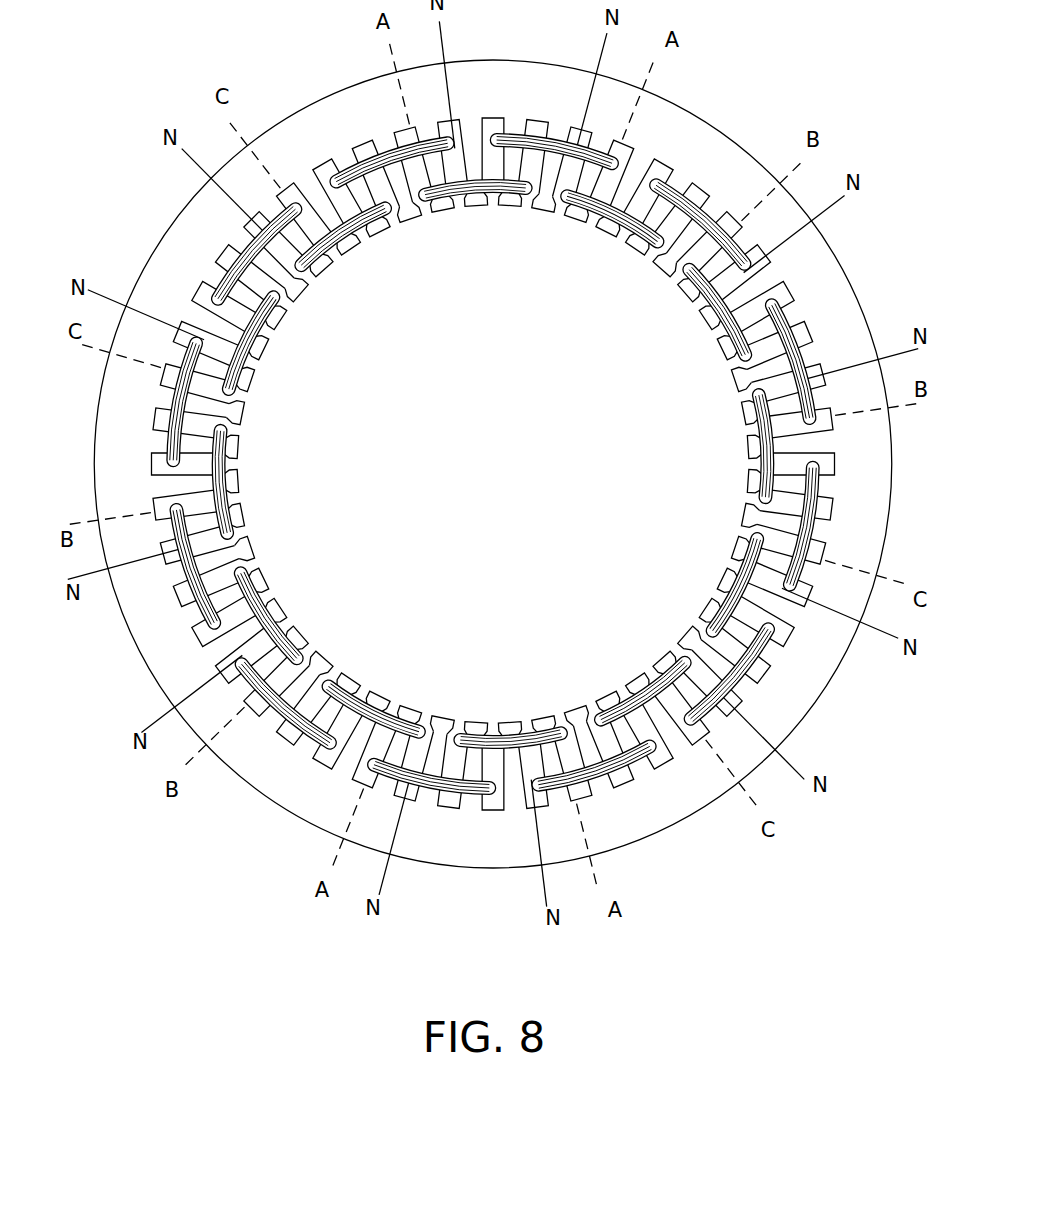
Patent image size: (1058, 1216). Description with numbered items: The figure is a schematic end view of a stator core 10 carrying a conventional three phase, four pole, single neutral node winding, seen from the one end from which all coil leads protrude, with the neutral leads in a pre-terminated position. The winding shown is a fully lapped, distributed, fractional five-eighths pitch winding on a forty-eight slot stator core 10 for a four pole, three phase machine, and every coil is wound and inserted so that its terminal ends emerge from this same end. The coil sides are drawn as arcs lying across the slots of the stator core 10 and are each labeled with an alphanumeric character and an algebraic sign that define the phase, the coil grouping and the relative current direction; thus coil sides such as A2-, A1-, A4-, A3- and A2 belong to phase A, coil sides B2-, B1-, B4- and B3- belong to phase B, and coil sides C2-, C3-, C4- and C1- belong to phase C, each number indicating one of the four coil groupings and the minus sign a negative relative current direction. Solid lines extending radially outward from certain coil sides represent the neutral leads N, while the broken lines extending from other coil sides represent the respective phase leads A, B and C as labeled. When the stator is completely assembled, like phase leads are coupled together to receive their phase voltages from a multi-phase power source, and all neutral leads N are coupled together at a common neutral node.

The stator core 10 is at (650, 838).
The coil side C2- is at (702, 211).
The coil side C3- is at (613, 228).
The coil side A2- is at (832, 526).
The coil side A1- is at (737, 446).
The coil side B2- is at (609, 772).
The coil side B1- is at (643, 689).
The coil side A2 is at (510, 724).
The coil side C4- is at (284, 717).
The coil side C1- is at (372, 701).
The coil side A4- is at (152, 401).
The coil side A3- is at (246, 482).
The coil side B4- is at (379, 157).
The coil side B3- is at (350, 234).